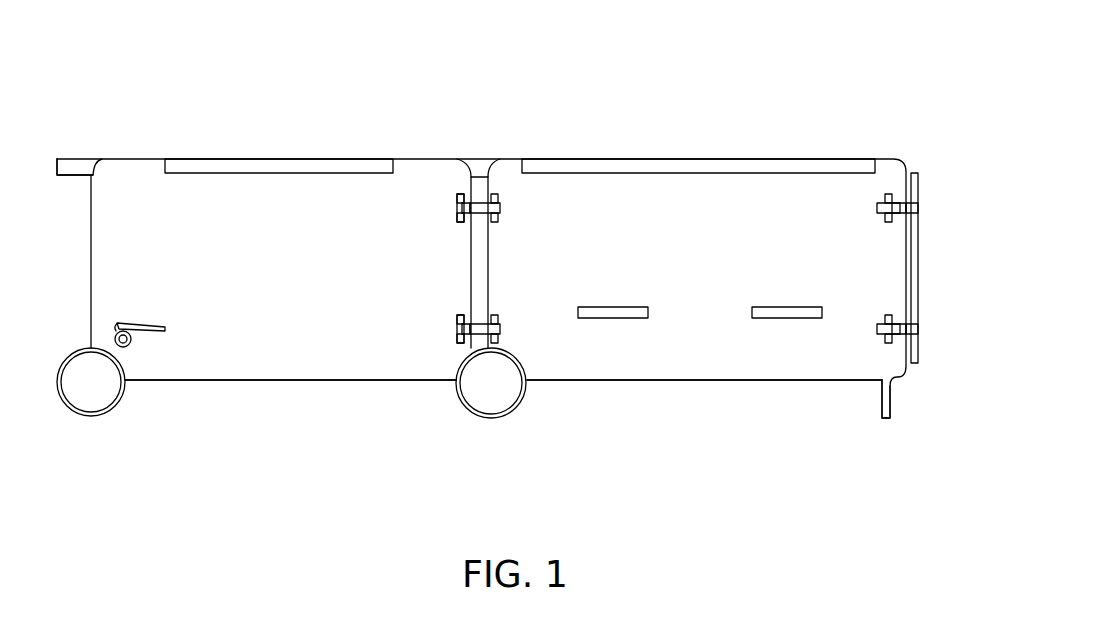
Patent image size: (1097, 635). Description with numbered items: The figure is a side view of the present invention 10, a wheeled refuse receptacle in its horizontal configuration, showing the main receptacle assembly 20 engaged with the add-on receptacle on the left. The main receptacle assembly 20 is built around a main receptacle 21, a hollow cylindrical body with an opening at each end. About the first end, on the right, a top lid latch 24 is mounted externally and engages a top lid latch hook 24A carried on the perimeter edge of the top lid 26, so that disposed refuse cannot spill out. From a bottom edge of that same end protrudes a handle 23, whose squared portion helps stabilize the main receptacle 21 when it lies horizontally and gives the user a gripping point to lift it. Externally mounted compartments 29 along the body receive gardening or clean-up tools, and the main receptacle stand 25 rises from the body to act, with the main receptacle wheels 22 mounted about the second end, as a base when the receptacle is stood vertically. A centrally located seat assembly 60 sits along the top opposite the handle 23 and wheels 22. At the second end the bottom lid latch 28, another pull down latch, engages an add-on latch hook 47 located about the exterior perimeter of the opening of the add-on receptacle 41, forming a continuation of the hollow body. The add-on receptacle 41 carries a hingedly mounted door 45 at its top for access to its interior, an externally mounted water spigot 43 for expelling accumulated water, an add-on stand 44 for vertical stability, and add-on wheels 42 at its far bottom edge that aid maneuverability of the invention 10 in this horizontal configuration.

The present invention 10 is at (762, 40).
The main receptacle assembly 20 is at (768, 380).
The main receptacle 21 is at (668, 355).
The main receptacle wheels 22 is at (491, 418).
The handle 23 is at (888, 418).
The top lid latch 24 is at (877, 208).
The top lid latch hook 24A is at (918, 209).
The main receptacle stand 25 is at (486, 168).
The top lid 26 is at (920, 243).
The bottom lid latch 28 is at (501, 209).
The compartments 29 is at (612, 318).
The add-on receptacle 41 is at (316, 355).
The add-on wheels 42 is at (92, 417).
The water spigot 43 is at (125, 348).
The add-on stand 44 is at (73, 167).
The door 45 is at (252, 160).
The add-on latch hook 47 is at (458, 207).
The seat assembly 60 is at (762, 157).